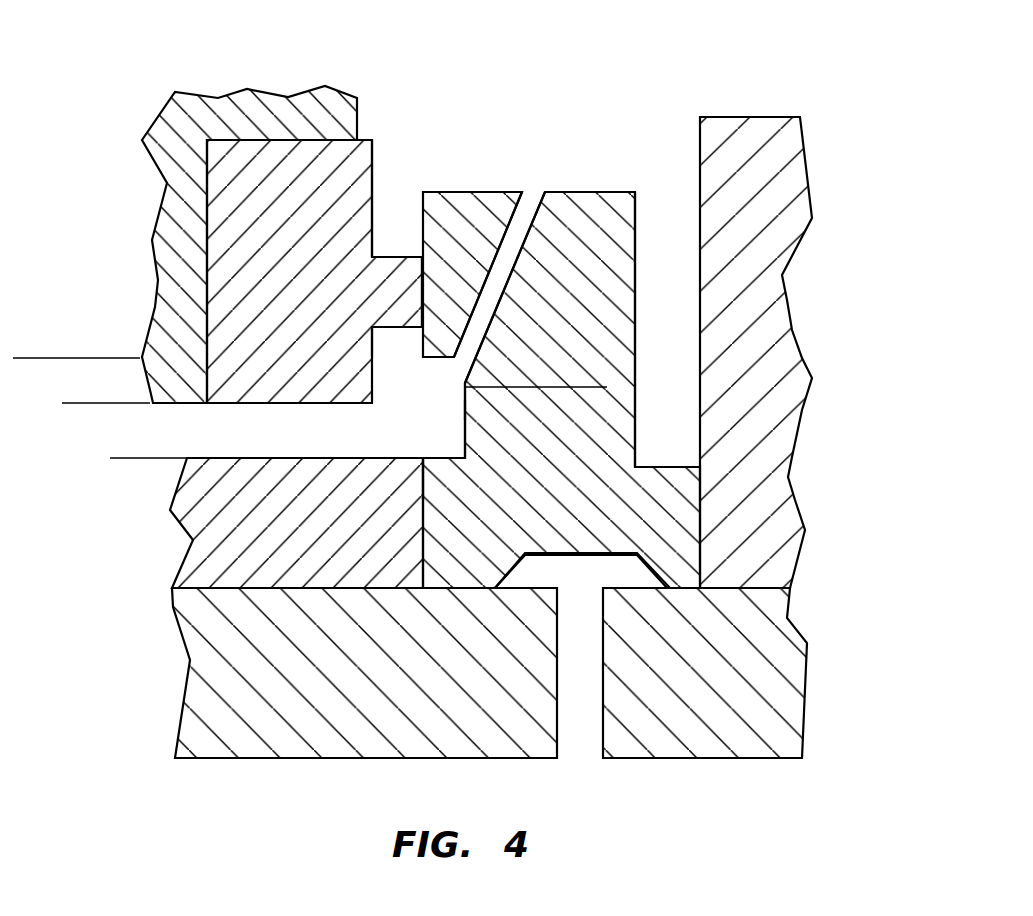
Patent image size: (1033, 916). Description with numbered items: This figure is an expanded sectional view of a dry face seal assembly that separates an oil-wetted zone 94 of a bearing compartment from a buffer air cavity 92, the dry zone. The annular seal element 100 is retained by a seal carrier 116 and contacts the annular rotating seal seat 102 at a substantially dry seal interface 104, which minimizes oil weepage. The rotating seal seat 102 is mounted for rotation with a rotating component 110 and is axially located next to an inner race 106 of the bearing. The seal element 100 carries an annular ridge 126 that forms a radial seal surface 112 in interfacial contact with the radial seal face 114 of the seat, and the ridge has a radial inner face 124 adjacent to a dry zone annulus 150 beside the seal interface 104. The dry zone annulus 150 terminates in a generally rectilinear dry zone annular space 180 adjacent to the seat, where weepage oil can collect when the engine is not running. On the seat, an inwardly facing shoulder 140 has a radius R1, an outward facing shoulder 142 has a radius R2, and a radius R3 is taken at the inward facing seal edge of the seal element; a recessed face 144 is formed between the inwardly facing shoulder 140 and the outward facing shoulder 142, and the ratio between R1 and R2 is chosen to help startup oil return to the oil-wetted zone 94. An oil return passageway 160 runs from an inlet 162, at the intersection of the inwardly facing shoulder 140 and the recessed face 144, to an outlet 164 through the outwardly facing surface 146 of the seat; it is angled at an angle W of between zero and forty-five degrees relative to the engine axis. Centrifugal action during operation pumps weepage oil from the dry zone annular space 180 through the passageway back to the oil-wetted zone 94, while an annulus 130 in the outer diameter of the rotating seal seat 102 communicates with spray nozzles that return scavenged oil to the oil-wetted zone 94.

The buffer air cavity 92 is at (110, 323).
The oil-wetted zone 94 is at (560, 63).
The annular seal element 100 is at (230, 209).
The annular rotating seal seat 102 is at (654, 375).
The dry seal interface 104 is at (407, 198).
The inner race 106 is at (792, 153).
The rotating component 110 is at (790, 679).
The radial seal surface 112 is at (420, 294).
The radial seal face 114 is at (443, 191).
The seal carrier 116 is at (154, 112).
The radial inner face 124 is at (422, 330).
The annular ridge 126 is at (314, 271).
The annulus 130 is at (628, 574).
The inwardly facing shoulder 140 is at (460, 380).
The outward facing shoulder 142 is at (447, 465).
The recessed face 144 is at (466, 412).
The outwardly facing surface 146 is at (614, 192).
The dry zone annulus 150 is at (269, 443).
The oil return passageway 160 is at (502, 236).
The inlet 162 is at (372, 460).
The outlet 164 is at (530, 200).
The dry zone annular space 180 is at (449, 448).
The angle W is at (523, 272).
The radius of the inwardly facing shoulder R1 is at (32, 366).
The radius of the outward facing shoulder R2 is at (128, 466).
The radius at the inward facing seal edge R3 is at (82, 411).